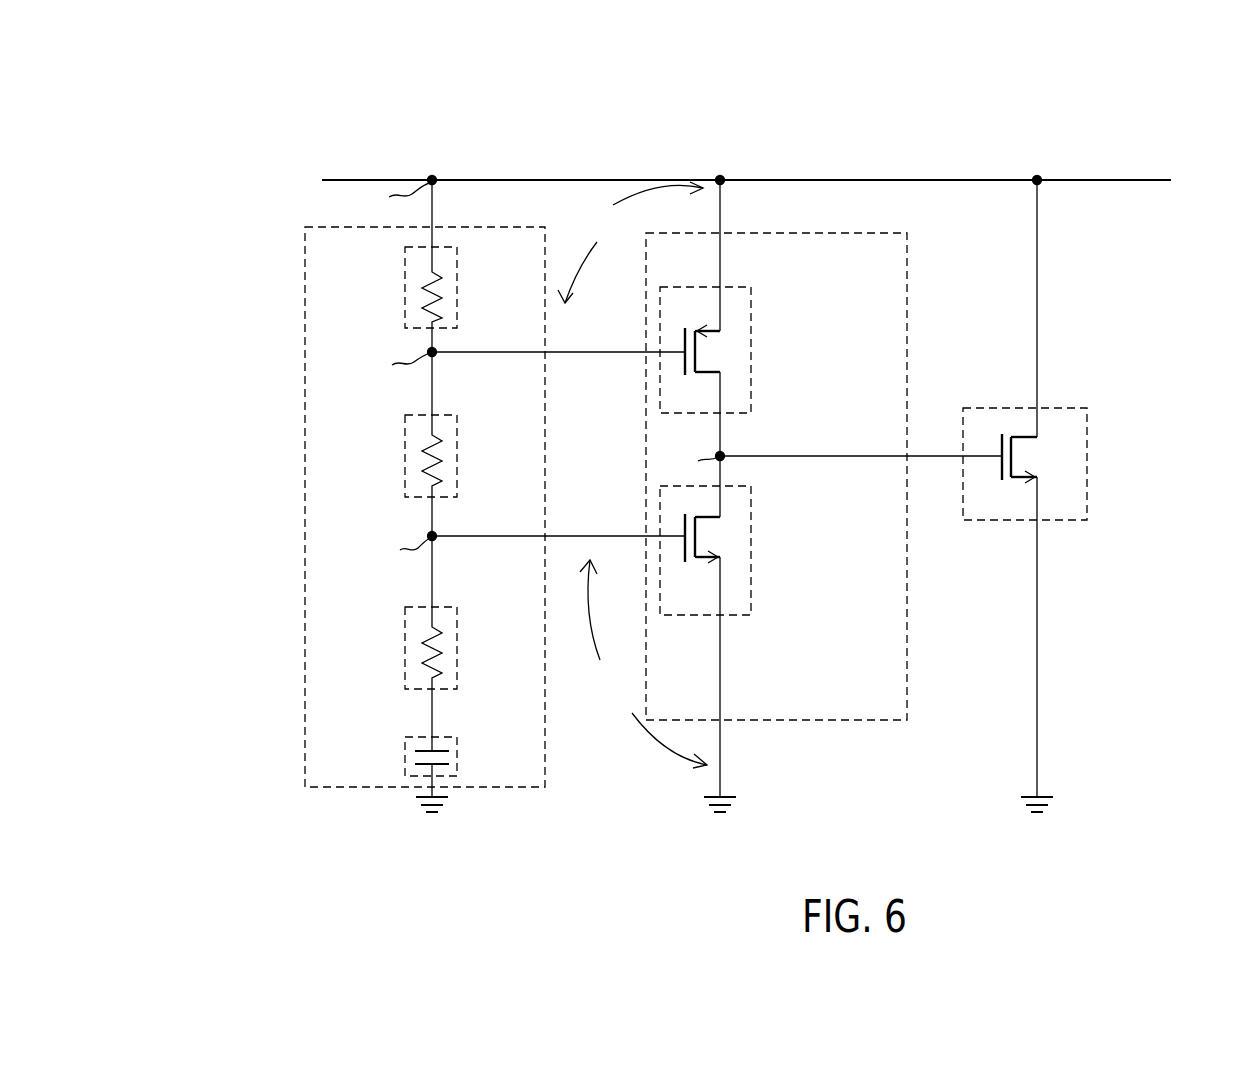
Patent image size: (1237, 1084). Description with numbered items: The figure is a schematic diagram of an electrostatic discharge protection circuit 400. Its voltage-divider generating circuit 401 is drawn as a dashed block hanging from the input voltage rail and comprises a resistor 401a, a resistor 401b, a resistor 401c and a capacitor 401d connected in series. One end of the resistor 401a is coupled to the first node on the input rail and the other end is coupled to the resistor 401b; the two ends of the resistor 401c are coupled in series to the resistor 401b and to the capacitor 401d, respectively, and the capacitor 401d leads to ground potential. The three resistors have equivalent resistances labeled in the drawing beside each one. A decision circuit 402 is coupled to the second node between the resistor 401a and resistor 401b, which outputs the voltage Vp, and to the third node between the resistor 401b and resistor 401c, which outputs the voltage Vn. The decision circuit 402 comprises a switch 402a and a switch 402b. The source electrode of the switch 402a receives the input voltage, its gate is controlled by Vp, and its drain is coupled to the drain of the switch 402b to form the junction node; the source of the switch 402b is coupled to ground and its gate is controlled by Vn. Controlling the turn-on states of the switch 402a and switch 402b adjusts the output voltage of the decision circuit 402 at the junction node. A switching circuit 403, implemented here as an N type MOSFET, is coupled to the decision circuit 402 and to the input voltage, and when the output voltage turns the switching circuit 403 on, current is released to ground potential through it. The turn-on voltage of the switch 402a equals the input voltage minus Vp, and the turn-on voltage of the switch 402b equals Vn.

The ESD protection circuit 400 is at (253, 87).
The voltage-divider generating circuit 401 is at (305, 458).
The resistor 401a is at (405, 287).
The resistor 401b is at (405, 454).
The resistor 401c is at (405, 648).
The capacitor 401d is at (405, 757).
The decision circuit 402 is at (908, 422).
The switch 402a is at (752, 322).
The switch 402b is at (752, 570).
The switching circuit 403 is at (1087, 463).